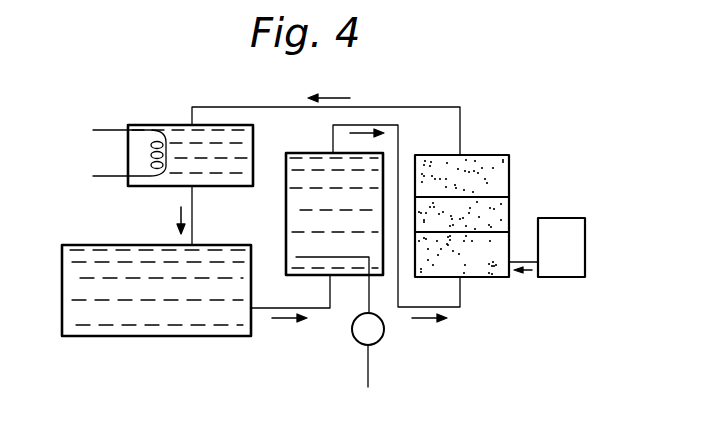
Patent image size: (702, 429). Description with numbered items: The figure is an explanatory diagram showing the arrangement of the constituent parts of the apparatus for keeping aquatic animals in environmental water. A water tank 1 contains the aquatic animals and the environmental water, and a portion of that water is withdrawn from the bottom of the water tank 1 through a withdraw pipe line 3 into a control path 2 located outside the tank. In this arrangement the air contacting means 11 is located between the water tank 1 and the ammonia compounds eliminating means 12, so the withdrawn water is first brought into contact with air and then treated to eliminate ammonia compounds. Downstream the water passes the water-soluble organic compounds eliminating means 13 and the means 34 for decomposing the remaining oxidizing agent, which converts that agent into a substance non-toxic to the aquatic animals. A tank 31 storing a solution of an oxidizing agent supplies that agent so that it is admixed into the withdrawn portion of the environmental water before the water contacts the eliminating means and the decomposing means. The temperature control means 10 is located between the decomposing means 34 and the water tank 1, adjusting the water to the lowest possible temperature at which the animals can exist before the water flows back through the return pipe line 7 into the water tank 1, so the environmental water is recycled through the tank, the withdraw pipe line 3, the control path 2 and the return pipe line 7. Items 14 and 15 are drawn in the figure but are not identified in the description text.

The water tank 1 is at (148, 320).
The control path 2 is at (462, 104).
The withdraw pipe line 3 is at (314, 312).
The return pipe line 7 is at (195, 218).
The temperature control means 10 is at (152, 160).
The air contacting means 11 is at (345, 258).
The ammonia compounds eliminating means 12 is at (490, 270).
The water-soluble organic compounds eliminating means 13 is at (497, 206).
The pump discharge line 14 is at (370, 380).
The pump 15 is at (382, 338).
The tank for storing a solution of an oxidizing agent 31 is at (578, 257).
The means for decomposing the remaining oxidizing agent 34 is at (498, 163).